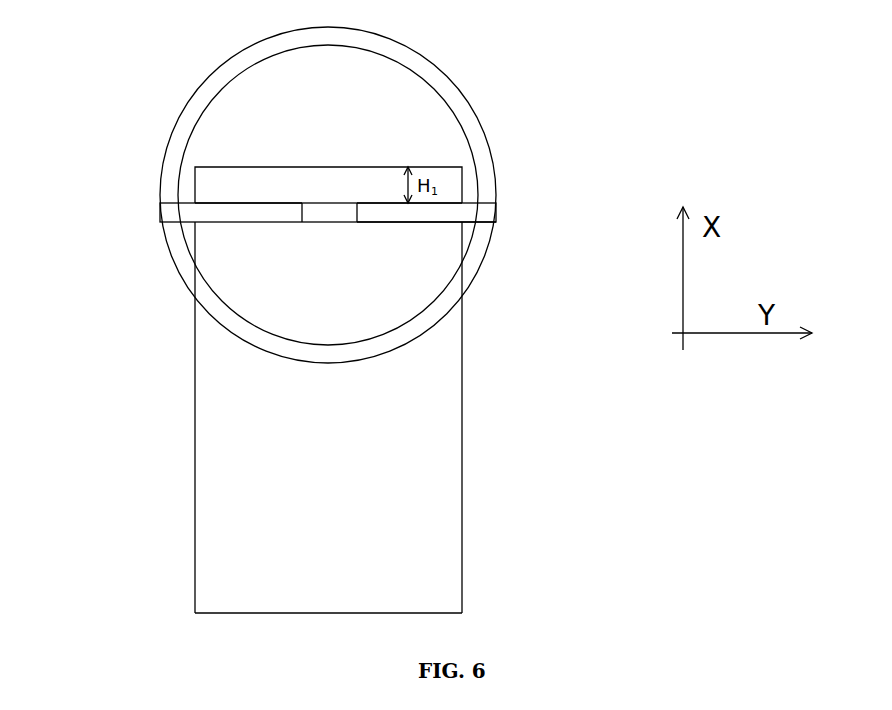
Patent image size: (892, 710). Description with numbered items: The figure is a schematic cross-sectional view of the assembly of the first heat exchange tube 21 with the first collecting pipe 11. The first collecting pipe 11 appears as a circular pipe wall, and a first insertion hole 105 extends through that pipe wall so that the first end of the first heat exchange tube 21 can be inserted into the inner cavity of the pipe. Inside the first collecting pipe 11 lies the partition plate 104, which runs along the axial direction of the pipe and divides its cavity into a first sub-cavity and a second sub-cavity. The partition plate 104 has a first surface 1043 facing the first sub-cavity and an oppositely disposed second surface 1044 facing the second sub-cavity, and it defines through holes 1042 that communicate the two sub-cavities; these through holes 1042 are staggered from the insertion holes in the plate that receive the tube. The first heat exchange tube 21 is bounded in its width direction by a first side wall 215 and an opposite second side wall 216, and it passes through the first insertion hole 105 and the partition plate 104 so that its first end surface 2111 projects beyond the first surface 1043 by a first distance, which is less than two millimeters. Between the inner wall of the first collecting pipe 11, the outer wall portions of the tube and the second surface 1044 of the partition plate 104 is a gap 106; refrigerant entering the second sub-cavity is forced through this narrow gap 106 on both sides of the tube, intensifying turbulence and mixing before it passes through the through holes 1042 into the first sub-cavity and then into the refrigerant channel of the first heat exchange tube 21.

The first collecting pipe 11 is at (365, 194).
The first insertion hole 105 is at (387, 197).
The first end surface 2111 is at (267, 137).
The partition plate 104 is at (313, 267).
The first surface 1043 is at (313, 174).
The through hole 1042 is at (222, 296).
The second surface 1044 is at (470, 244).
The gap 106 is at (340, 273).
The first heat exchange tube 21 is at (350, 417).
The first side wall 215 is at (462, 462).
The second side wall 216 is at (139, 417).